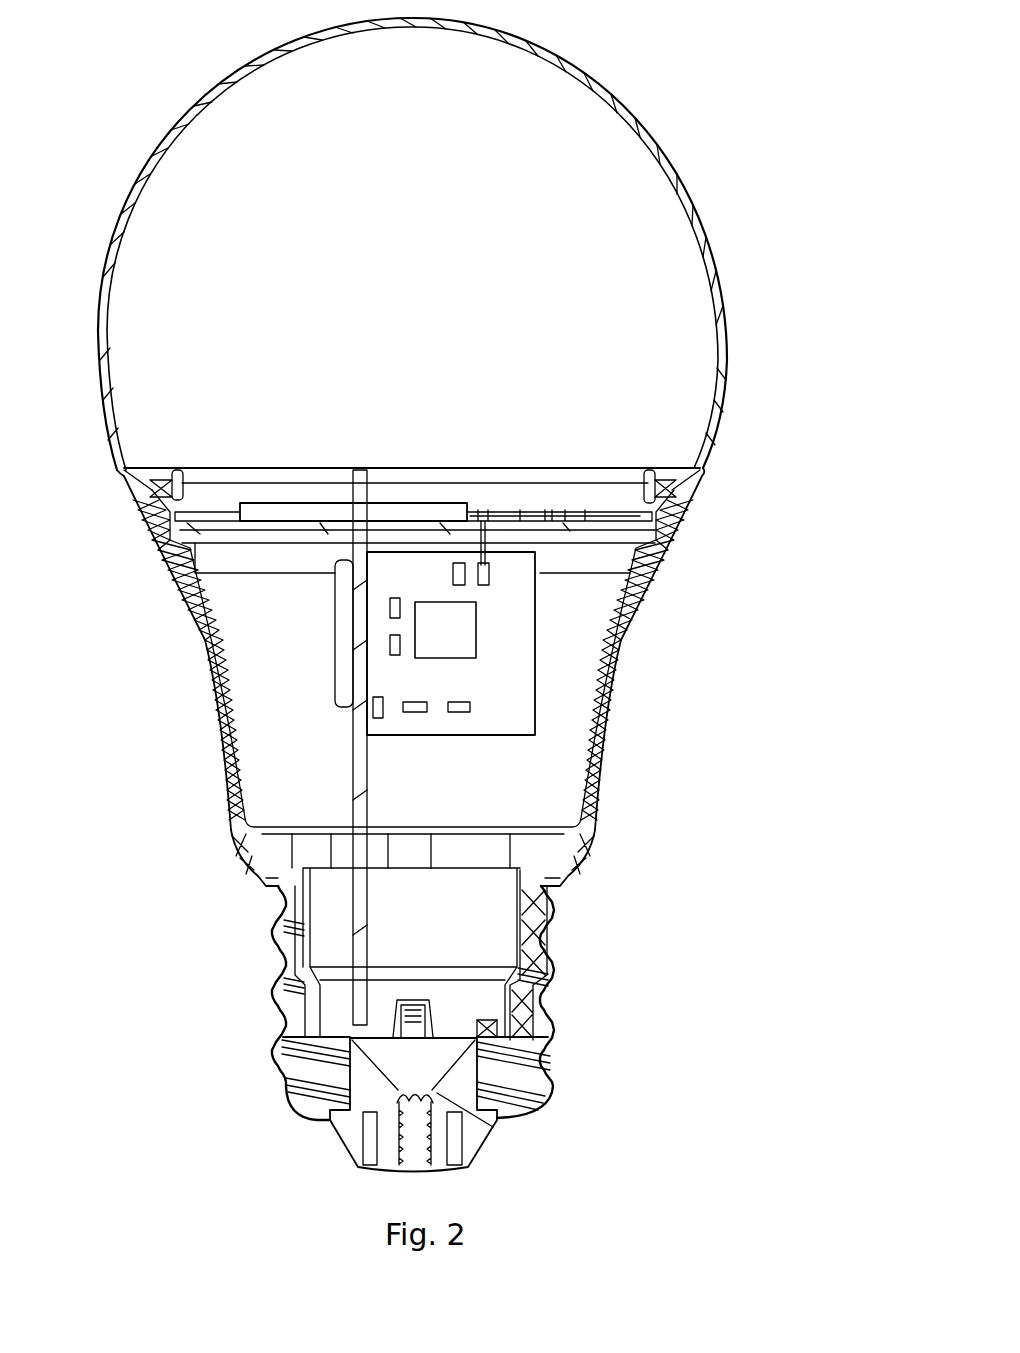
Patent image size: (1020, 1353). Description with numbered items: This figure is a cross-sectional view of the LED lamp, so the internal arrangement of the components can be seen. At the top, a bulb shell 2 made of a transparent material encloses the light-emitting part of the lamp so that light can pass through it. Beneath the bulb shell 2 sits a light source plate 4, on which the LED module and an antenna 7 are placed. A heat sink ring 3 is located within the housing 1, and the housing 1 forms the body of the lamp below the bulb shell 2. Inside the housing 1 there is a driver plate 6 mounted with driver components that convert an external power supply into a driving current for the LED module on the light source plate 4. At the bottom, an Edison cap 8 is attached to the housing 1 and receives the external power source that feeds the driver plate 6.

The housing 1 is at (143, 496).
The bulb shell 2 is at (645, 115).
The heat sink ring 3 is at (215, 672).
The light source plate 4 is at (645, 527).
The driver plate 6 is at (512, 680).
The antenna 7 is at (437, 512).
The Edison cap 8 is at (540, 945).